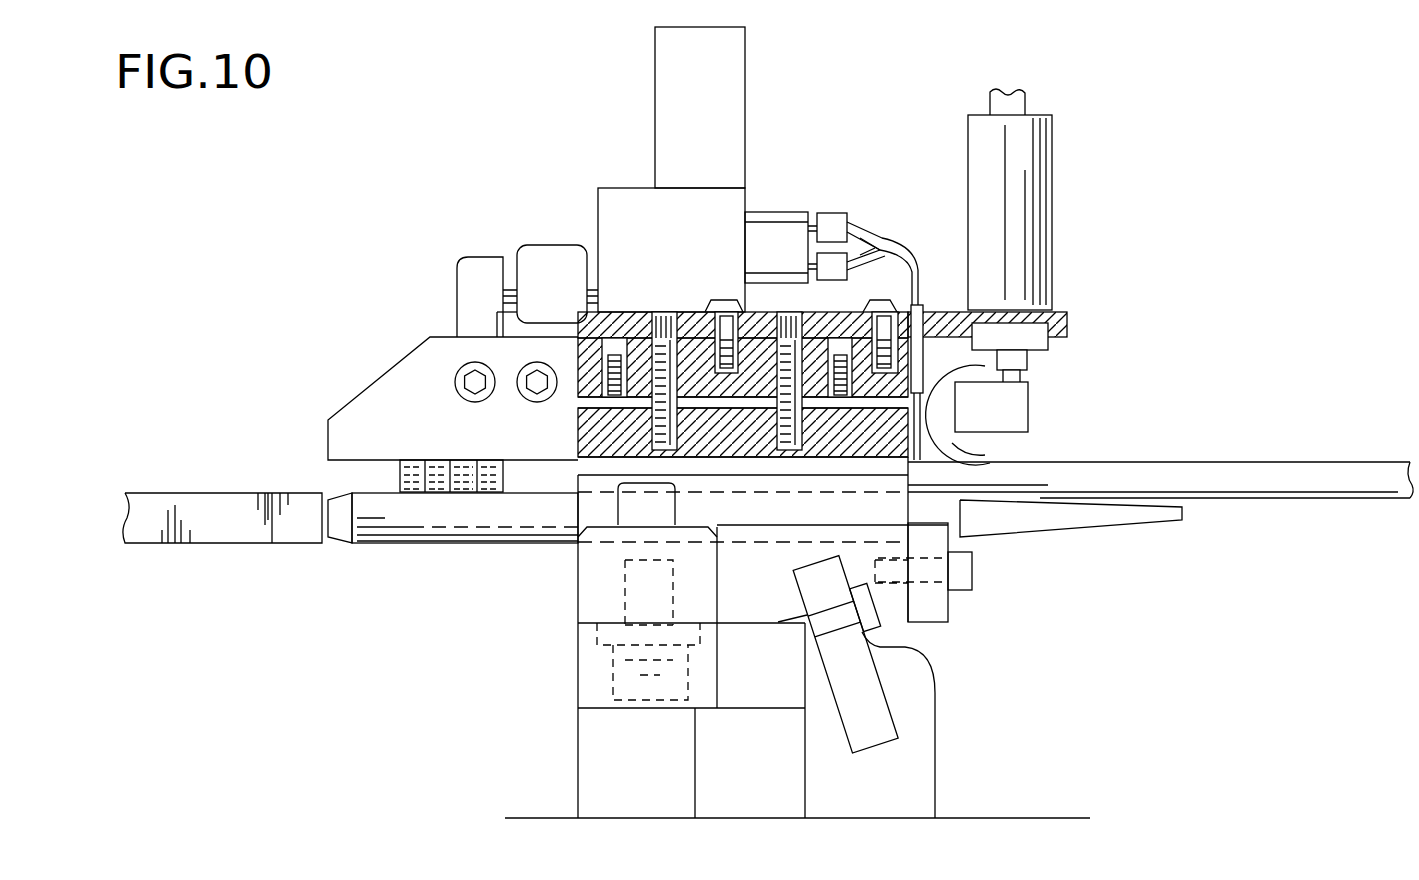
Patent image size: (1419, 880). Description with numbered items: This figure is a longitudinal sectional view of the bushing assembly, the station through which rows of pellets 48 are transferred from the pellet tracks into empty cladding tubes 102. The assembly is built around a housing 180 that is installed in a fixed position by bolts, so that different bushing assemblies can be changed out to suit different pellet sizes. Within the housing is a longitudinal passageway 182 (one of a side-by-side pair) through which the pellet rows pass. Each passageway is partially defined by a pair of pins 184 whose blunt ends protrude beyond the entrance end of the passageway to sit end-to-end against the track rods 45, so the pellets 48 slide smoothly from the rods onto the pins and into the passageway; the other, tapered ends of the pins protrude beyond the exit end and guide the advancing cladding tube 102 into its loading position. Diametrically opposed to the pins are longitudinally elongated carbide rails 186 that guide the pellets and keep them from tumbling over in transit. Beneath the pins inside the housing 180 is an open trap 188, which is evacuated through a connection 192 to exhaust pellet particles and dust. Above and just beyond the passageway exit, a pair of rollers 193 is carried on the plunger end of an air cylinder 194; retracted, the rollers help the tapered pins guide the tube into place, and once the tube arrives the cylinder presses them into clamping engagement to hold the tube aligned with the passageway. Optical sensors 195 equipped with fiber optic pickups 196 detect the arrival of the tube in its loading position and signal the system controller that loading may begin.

The track rods 45 is at (243, 502).
The pellets 48 is at (493, 463).
The cladding tubes 102 is at (1240, 468).
The housing 180 is at (862, 350).
The longitudinal passageway 182 is at (743, 477).
The pins 184 is at (430, 522).
The carbide rails 186 is at (847, 465).
The open trap 188 is at (771, 607).
The connection 192 is at (933, 627).
The rollers 193 is at (1010, 447).
The air cylinder 194 is at (1025, 207).
The optical sensors 195 is at (633, 242).
The fiber optic pickups 196 is at (932, 262).